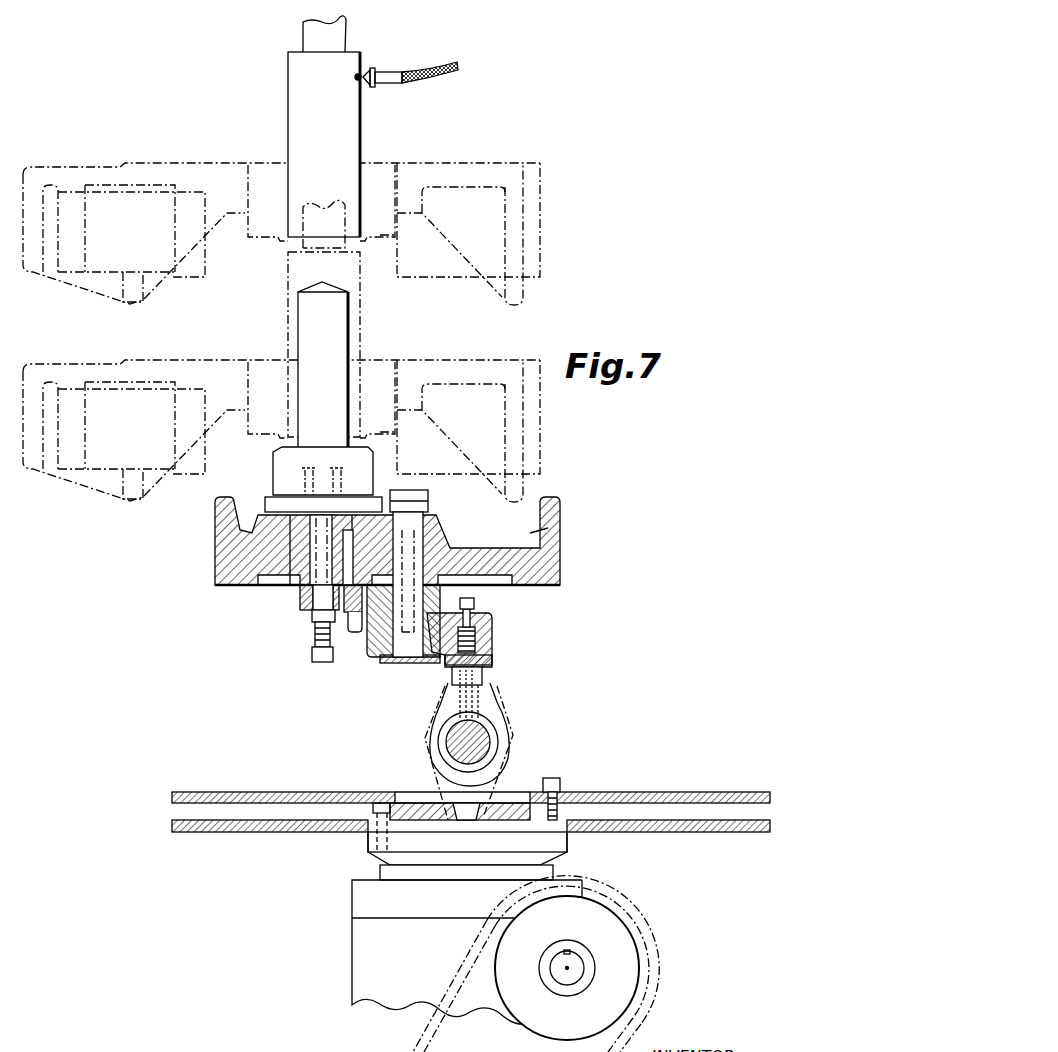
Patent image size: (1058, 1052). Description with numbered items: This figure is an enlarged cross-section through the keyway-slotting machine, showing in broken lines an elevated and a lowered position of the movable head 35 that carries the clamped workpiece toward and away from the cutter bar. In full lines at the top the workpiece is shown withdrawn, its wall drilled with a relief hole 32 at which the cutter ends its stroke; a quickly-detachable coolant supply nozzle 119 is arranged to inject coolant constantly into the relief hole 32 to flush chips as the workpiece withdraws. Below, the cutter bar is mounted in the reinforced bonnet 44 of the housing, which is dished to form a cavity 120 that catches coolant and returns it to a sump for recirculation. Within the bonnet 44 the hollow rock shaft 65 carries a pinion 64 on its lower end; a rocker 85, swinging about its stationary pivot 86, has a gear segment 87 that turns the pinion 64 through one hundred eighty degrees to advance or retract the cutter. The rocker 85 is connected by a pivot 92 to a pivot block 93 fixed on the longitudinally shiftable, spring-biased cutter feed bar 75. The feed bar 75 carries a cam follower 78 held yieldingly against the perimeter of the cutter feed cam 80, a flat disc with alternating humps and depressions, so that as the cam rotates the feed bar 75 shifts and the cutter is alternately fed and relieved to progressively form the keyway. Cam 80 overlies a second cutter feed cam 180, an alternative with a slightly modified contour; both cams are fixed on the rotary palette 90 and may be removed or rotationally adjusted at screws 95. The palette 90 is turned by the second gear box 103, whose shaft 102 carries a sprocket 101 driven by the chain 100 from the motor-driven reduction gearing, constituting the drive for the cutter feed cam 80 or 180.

The relief hole 32 is at (358, 77).
The coolant supply nozzle 119 is at (385, 77).
The movable head 35 is at (540, 207).
The cavity 120 is at (548, 528).
The bonnet 44 is at (562, 553).
The pinion 64 is at (300, 604).
The rock shaft 65 is at (312, 617).
The gear segment 87 is at (348, 626).
The rocker 85 is at (400, 634).
The stationary pivot 86 is at (368, 657).
The pivot 92 is at (490, 641).
The pivot block 93 is at (488, 723).
The cutter feed bar 75 is at (483, 733).
The cam follower 78 is at (432, 782).
The screw 95 is at (553, 778).
The cutter feed cam 80 is at (654, 792).
The second cutter feed cam 180 is at (712, 832).
The palette 90 is at (520, 855).
The second gear box 103 is at (362, 940).
The shaft 102 is at (575, 968).
The sprocket 101 is at (608, 995).
The chain 100 is at (638, 1023).